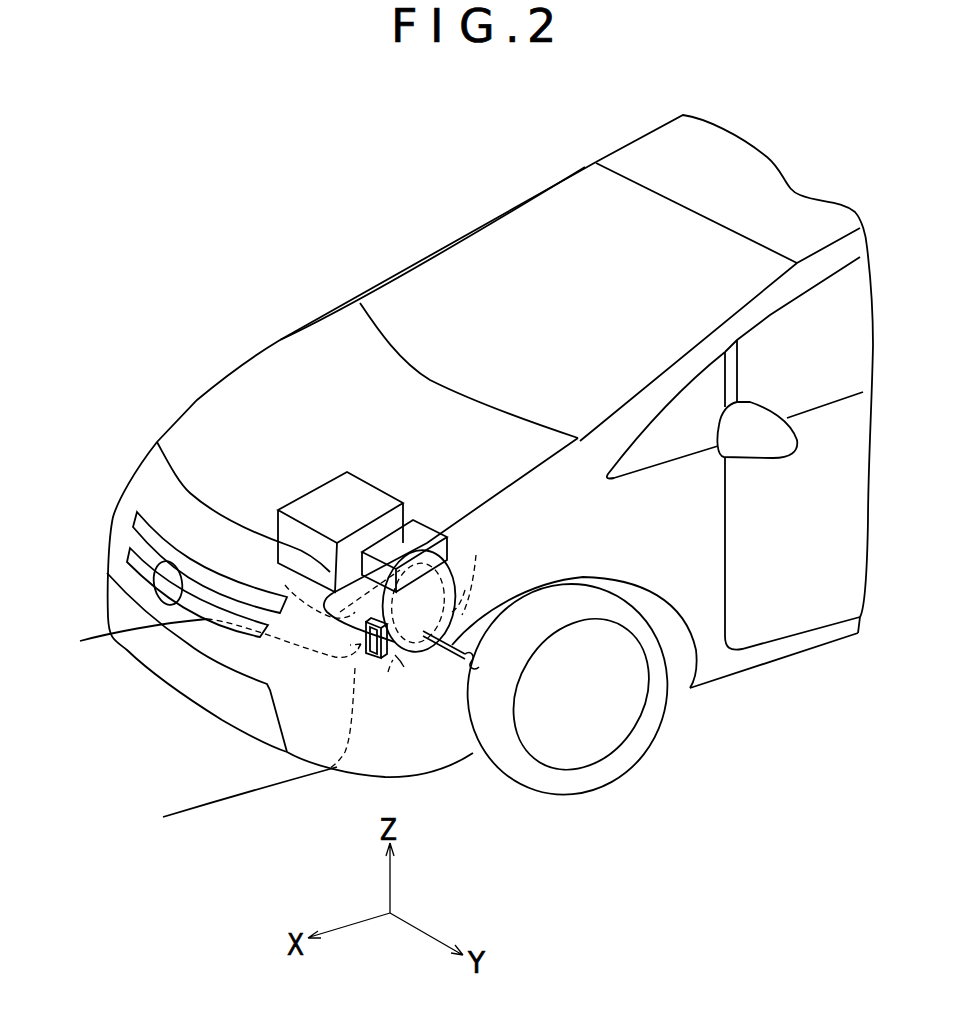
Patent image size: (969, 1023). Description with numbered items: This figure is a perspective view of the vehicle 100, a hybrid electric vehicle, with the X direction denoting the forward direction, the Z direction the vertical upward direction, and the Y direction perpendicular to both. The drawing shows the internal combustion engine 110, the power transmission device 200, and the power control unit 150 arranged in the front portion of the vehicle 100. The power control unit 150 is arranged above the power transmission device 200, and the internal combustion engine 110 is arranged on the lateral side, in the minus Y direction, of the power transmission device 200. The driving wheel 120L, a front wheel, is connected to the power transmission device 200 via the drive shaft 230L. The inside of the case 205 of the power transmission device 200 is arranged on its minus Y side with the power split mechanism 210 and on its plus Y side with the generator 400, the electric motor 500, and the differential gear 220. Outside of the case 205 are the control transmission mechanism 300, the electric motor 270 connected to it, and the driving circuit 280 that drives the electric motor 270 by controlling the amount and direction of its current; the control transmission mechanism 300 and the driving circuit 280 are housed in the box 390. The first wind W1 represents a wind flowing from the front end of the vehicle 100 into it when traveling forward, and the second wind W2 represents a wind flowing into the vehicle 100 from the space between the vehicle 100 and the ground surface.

The vehicle 100 is at (280, 291).
The internal combustion engine 110 is at (297, 503).
The driving wheel 120L is at (647, 748).
The power control unit 150 is at (428, 530).
The power transmission device 200 is at (445, 630).
The case 205 is at (362, 618).
The power split mechanism 210 is at (285, 585).
The differential gear 220 is at (458, 600).
The drive shaft 230L is at (617, 565).
The electric motor 270 is at (404, 667).
The driving circuit 280 is at (367, 718).
The control transmission mechanism 300 is at (388, 672).
The box 390 is at (363, 668).
The generator 400 is at (465, 590).
The electric motor 500 is at (476, 555).
The first wind W1 is at (95, 641).
The second wind W2 is at (232, 810).